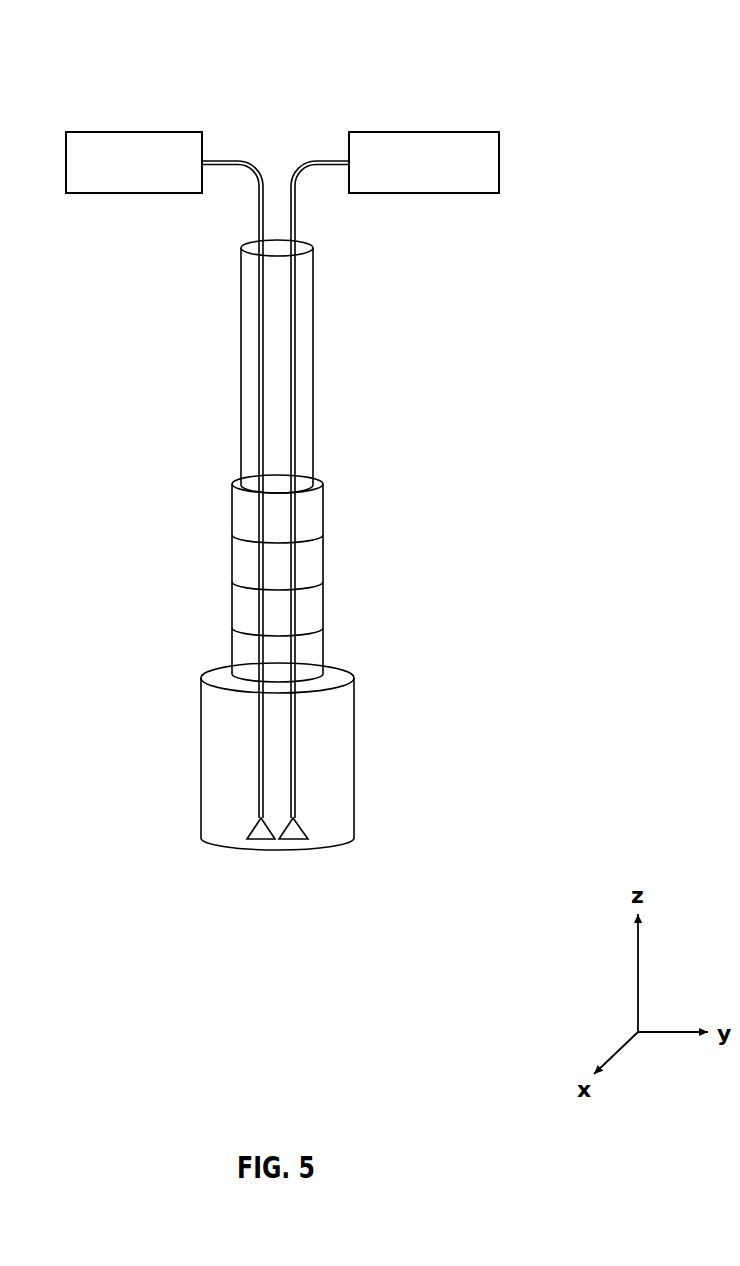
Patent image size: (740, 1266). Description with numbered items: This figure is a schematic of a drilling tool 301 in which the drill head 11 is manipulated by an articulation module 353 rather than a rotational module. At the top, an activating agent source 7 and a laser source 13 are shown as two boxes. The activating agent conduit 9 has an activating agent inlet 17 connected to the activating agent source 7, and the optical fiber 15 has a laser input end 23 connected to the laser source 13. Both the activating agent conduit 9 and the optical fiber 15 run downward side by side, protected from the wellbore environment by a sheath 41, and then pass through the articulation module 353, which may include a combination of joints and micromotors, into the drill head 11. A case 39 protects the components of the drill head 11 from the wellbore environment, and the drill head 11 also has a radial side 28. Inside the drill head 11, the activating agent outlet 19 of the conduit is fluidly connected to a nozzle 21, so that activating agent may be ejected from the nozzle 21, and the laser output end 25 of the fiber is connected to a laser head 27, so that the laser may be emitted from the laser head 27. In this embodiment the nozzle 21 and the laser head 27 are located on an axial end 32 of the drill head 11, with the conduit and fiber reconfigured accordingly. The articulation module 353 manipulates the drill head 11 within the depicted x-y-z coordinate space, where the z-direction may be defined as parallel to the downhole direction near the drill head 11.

The drilling tool 301 is at (604, 45).
The activating agent source 7 is at (105, 131).
The laser source 13 is at (465, 131).
The activating agent inlet 17 is at (211, 155).
The laser input end 23 is at (340, 155).
The activating agent conduit 9 is at (258, 338).
The optical fiber 15 is at (298, 338).
The sheath 41 is at (242, 423).
The articulation module 353 is at (232, 555).
The case 39 is at (343, 665).
The radial side 28 is at (293, 782).
The drill head 11 is at (218, 723).
The activating agent outlet 19 is at (257, 808).
The laser output end 25 is at (298, 808).
The nozzle 21 is at (255, 829).
The laser head 27 is at (302, 829).
The axial end 32 is at (240, 853).